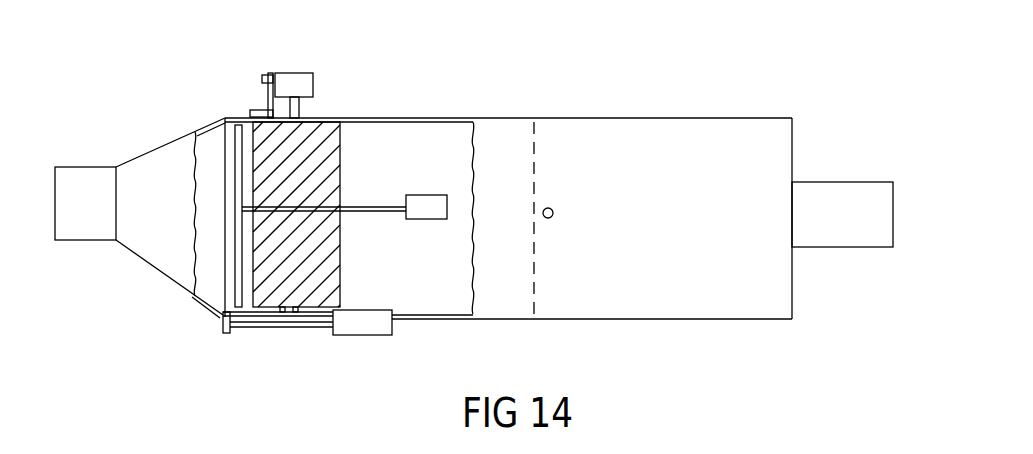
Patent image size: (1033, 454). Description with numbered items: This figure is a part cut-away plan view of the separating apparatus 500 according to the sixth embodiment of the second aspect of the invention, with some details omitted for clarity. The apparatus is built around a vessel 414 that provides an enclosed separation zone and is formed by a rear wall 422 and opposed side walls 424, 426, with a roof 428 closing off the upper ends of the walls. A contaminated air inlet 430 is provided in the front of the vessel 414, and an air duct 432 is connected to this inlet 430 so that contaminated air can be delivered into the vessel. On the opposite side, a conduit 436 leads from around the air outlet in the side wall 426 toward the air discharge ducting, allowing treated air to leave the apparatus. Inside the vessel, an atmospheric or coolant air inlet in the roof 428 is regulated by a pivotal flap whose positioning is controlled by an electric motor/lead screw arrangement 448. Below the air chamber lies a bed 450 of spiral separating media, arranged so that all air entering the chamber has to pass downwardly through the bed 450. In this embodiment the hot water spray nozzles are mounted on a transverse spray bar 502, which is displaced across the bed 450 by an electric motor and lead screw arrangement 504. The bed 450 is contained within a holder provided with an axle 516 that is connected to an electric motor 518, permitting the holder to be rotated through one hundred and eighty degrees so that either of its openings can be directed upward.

The vessel 414 is at (808, 288).
The rear wall 422 is at (793, 153).
The side wall 424 is at (672, 319).
The side wall 426 is at (680, 118).
The roof 428 is at (705, 227).
The contaminated air inlet 430 is at (126, 189).
The air duct 432 is at (80, 222).
The conduit 436 is at (848, 197).
The electric motor/lead screw arrangement 448 is at (365, 335).
The bed of spiral separating media 450 is at (330, 250).
The separating apparatus 500 is at (786, 80).
The transverse spray bar 502 is at (235, 267).
The electric motor and lead screw arrangement 504 is at (428, 205).
The axle 516 is at (299, 107).
The electric motor 518 is at (293, 85).